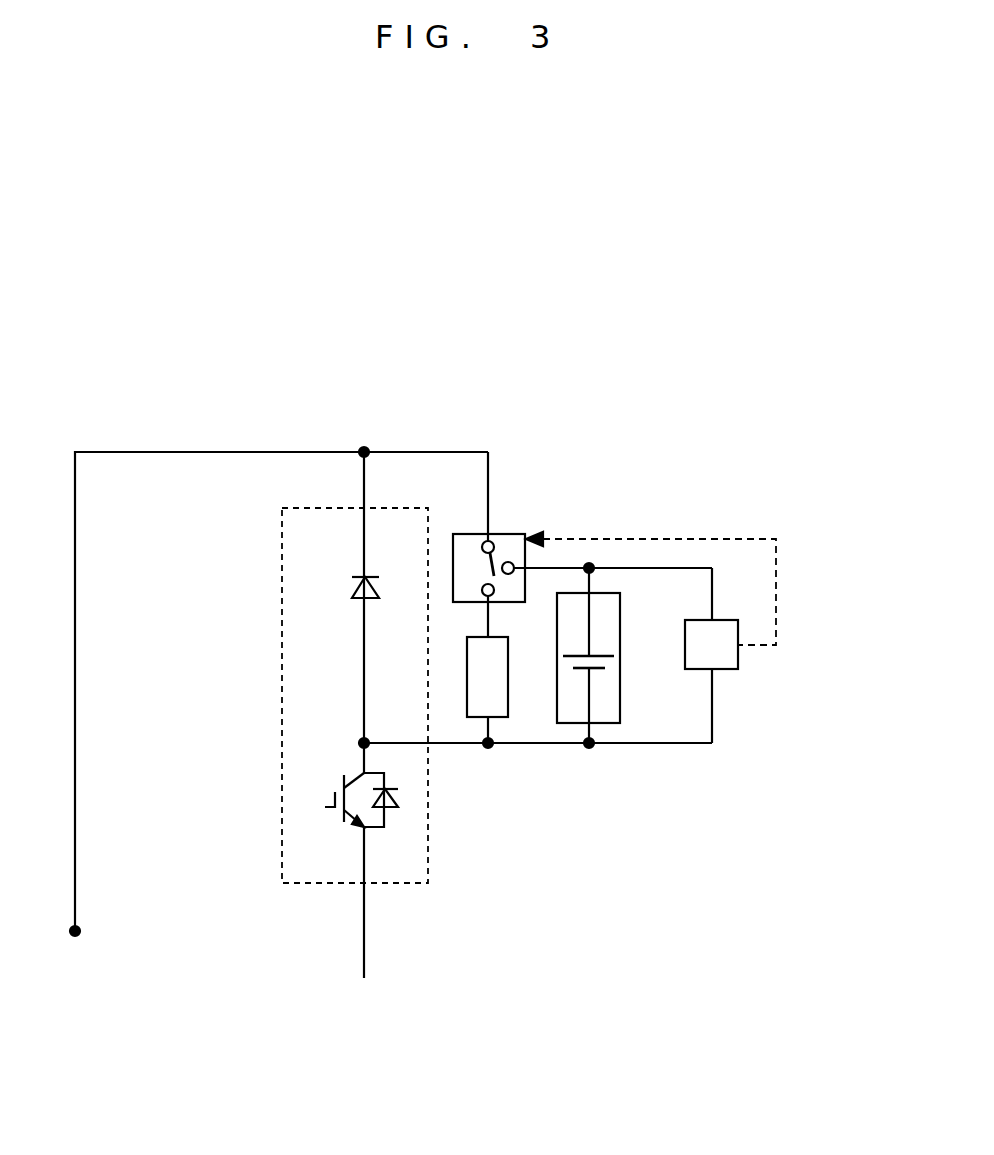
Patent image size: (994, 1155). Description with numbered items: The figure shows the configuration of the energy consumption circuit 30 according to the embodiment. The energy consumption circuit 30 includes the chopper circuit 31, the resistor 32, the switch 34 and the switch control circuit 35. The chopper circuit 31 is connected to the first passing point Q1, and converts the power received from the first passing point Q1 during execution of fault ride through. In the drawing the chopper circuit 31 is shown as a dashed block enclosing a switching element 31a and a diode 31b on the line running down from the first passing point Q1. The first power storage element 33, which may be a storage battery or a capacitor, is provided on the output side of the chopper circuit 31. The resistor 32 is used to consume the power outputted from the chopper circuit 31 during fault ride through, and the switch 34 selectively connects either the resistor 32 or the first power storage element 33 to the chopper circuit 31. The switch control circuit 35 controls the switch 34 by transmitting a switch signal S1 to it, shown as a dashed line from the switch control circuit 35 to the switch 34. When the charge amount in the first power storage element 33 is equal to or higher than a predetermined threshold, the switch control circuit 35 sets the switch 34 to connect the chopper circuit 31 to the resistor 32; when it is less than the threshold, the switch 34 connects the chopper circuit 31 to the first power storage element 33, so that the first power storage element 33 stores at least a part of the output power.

The energy consumption circuit 30 is at (565, 398).
The chopper circuit 31 is at (300, 883).
The IGBT switching element 31a is at (337, 818).
The diode 31b is at (348, 592).
The resistor 32 is at (507, 700).
The first power storage element 33 is at (619, 707).
The switch 34 is at (516, 533).
The switch control circuit 35 is at (738, 660).
The switch signal S1 is at (776, 590).
The first passing point Q1 is at (80, 934).